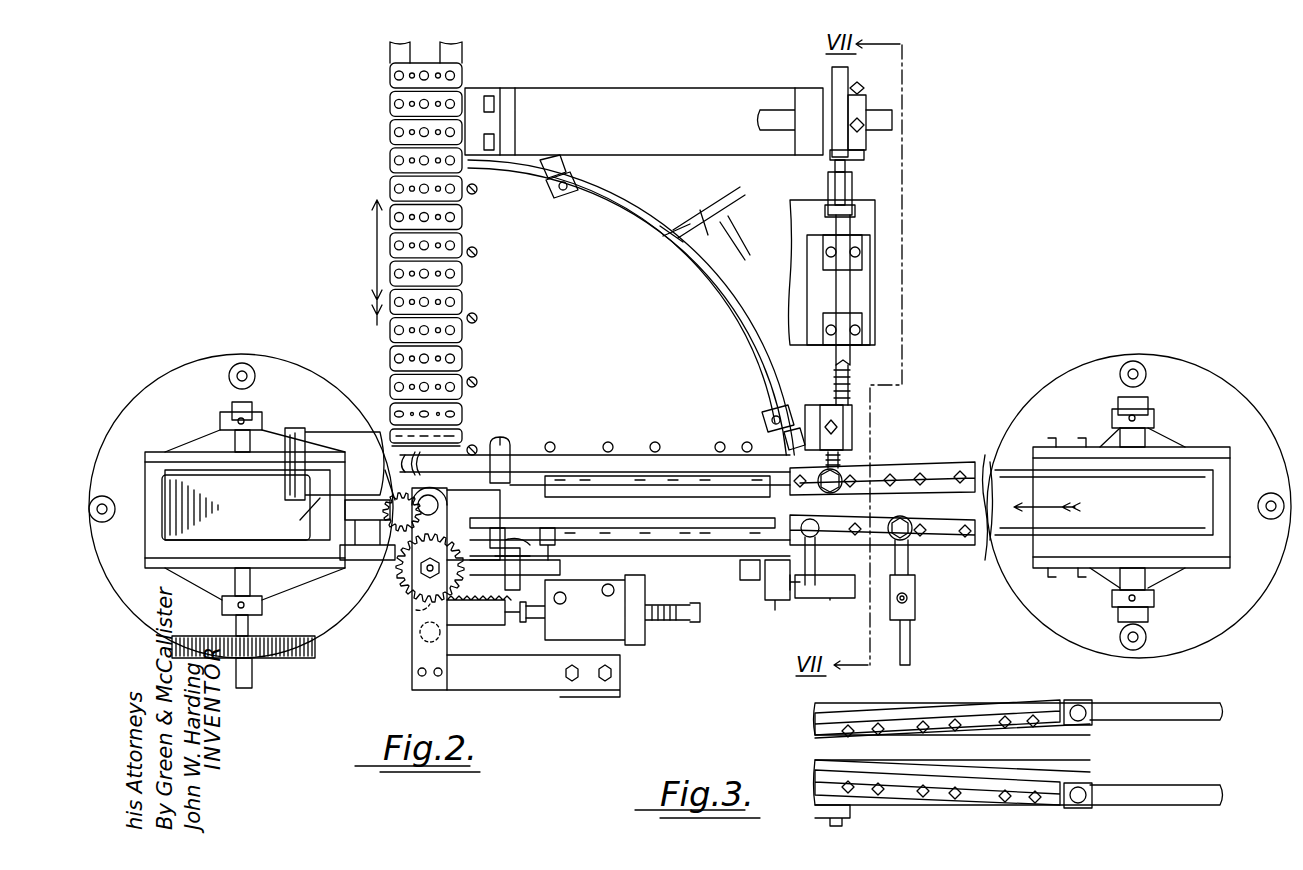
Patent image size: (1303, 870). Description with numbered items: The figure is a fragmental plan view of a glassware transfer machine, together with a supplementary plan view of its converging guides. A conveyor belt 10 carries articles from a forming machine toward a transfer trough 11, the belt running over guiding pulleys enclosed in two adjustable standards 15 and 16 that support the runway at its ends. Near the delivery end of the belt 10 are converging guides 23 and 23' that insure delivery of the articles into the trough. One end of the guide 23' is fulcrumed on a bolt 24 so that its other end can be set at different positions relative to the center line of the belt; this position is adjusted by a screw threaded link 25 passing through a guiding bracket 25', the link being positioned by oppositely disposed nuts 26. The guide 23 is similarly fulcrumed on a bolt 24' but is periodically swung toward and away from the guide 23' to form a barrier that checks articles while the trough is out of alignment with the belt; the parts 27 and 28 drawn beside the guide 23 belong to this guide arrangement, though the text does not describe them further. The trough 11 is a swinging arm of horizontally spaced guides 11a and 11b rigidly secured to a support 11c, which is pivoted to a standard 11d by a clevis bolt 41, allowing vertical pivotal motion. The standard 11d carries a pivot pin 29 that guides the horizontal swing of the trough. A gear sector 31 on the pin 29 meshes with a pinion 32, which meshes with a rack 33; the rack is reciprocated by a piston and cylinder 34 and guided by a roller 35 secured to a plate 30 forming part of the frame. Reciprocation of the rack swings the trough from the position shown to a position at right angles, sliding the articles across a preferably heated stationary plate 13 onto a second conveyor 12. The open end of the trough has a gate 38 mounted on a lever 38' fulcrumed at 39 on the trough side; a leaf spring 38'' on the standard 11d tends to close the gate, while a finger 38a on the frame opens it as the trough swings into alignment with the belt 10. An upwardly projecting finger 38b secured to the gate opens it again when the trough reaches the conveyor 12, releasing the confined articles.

In FIG. 2, the conveyor belt 10 is at (1148, 517).
In FIG. 2, the transfer trough 11 is at (590, 468).
In FIG. 2, the guide 11a is at (665, 528).
In FIG. 2, the guide 11b is at (655, 470).
In FIG. 2, the support 11c is at (532, 478).
In FIG. 2, the standard 11d is at (480, 470).
In FIG. 2, the second conveyor 12 is at (462, 273).
In FIG. 2, the stationary plate 13 is at (625, 352).
In FIG. 2, the adjustable standard 15 is at (140, 600).
In FIG. 2, the adjustable standard 16 is at (1180, 580).
In FIG. 2, the converging guide 23 is at (896, 563).
In FIG. 3, the converging guide 23 is at (940, 785).
In FIG. 2, the converging guide 23' is at (882, 459).
In FIG. 3, the converging guide 23' is at (937, 704).
In FIG. 3, the bolt 24 is at (1095, 698).
In FIG. 3, the bolt 24' is at (1098, 780).
In FIG. 2, the screw threaded link 25 is at (832, 297).
In FIG. 2, the guiding bracket 25' is at (862, 407).
In FIG. 2, the nuts 26 is at (842, 465).
In FIG. 2, the bracket 27 is at (918, 590).
In FIG. 2, the bolt 28 is at (855, 600).
In FIG. 2, the pivot pin 29 is at (380, 445).
In FIG. 2, the plate 30 is at (412, 620).
In FIG. 2, the gear sector 31 is at (440, 500).
In FIG. 2, the pinion 32 is at (405, 600).
In FIG. 2, the rack 33 is at (468, 612).
In FIG. 2, the piston and cylinder 34 is at (610, 640).
In FIG. 2, the roller 35 is at (420, 650).
In FIG. 2, the gate 38 is at (775, 606).
In FIG. 2, the lever 38' is at (749, 581).
In FIG. 2, the leaf spring 38'' is at (500, 547).
In FIG. 2, the finger 38a is at (505, 570).
In FIG. 2, the upwardly projecting finger 38b is at (802, 585).
In FIG. 2, the fulcrum 39 is at (560, 550).
In FIG. 2, the clevis bolt 41 is at (344, 471).